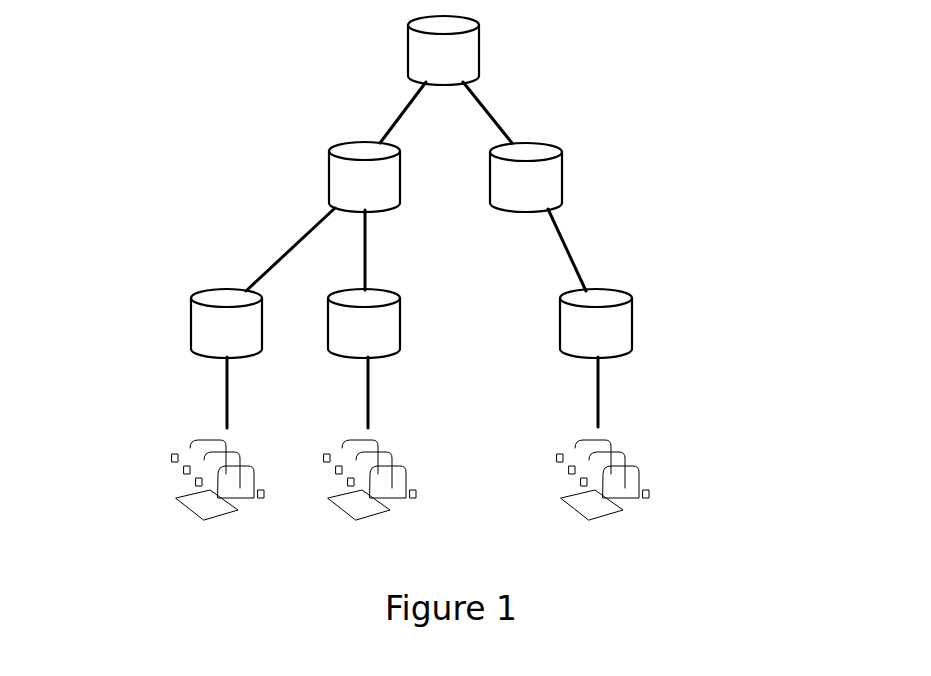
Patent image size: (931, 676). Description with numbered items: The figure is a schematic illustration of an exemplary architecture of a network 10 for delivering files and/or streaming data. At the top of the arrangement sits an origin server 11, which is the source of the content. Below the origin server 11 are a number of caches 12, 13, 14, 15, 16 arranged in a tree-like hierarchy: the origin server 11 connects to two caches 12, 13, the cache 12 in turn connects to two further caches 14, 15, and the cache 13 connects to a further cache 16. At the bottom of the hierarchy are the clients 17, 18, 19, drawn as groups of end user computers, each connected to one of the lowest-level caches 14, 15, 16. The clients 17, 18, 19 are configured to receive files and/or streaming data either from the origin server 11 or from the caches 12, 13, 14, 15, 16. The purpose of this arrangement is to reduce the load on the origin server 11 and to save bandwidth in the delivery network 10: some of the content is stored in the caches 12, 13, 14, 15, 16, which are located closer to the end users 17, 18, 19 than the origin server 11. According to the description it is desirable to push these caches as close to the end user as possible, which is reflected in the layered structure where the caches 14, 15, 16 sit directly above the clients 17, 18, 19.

The network 10 is at (131, 143).
The origin server 11 is at (479, 62).
The cache 12 is at (329, 177).
The cache 13 is at (562, 177).
The cache 14 is at (191, 327).
The cache 15 is at (400, 327).
The cache 16 is at (632, 325).
The client 17 is at (147, 475).
The client 18 is at (433, 475).
The client 19 is at (678, 473).